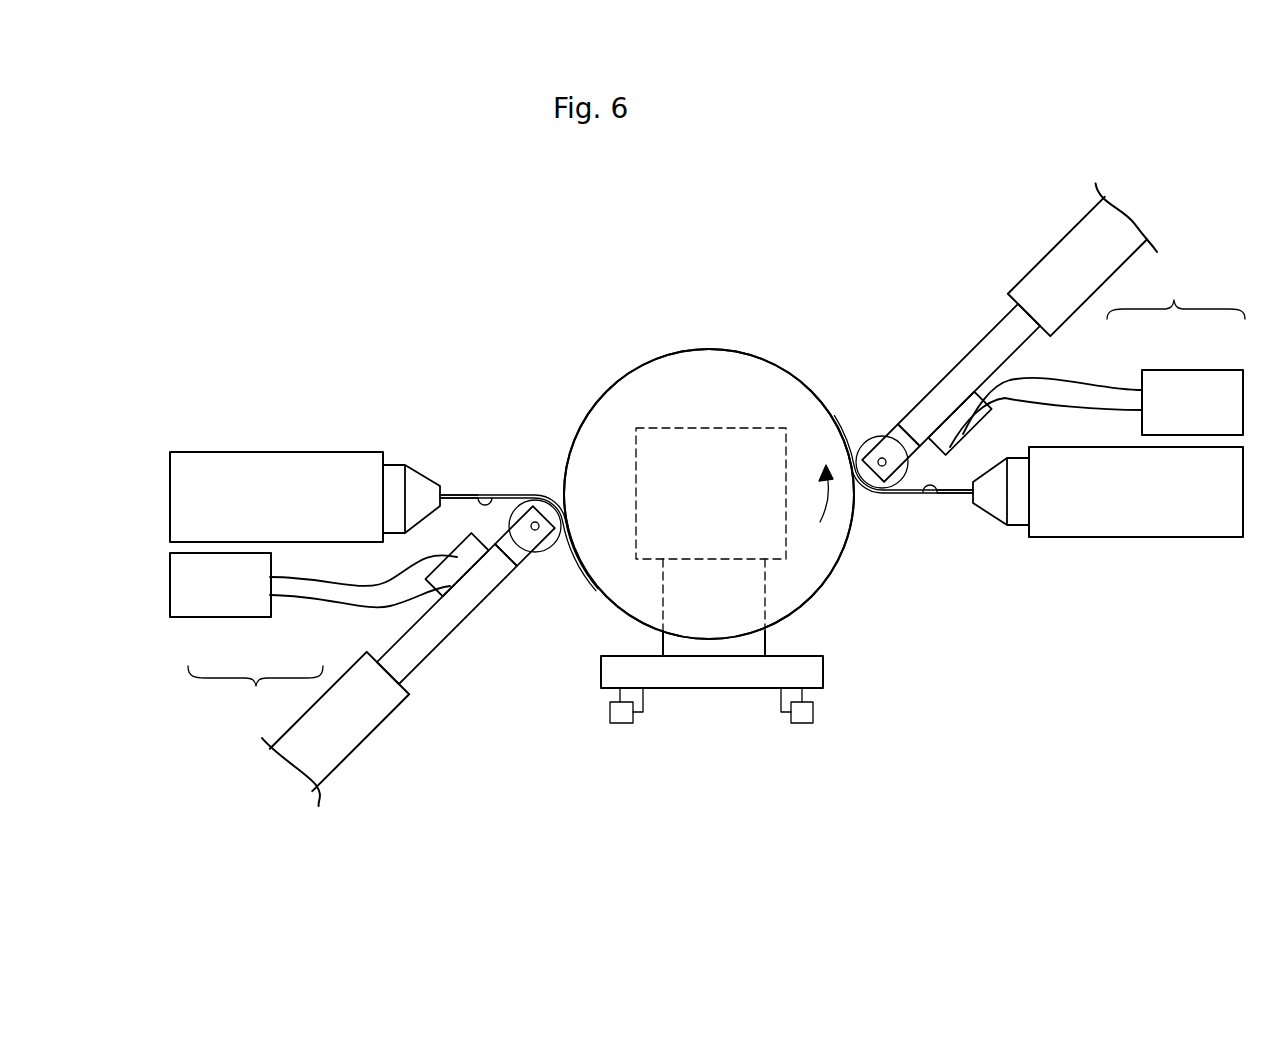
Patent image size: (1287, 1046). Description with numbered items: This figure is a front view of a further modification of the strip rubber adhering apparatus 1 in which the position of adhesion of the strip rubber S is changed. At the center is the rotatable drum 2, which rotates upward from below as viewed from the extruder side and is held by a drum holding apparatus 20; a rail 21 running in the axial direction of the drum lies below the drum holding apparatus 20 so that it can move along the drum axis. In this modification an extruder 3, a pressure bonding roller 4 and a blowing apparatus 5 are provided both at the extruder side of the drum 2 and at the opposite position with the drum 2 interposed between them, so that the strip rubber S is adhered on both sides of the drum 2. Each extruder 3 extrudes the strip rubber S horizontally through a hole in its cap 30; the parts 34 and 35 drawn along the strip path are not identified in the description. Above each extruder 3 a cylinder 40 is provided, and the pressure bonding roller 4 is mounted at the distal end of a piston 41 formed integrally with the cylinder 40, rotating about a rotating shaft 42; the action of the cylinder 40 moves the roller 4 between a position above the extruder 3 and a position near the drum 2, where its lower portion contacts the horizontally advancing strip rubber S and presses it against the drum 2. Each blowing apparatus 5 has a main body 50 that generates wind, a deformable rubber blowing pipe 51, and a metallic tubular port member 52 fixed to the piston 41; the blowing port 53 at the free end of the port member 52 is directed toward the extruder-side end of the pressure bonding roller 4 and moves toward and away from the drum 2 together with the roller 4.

The strip rubber adhering apparatus 1 is at (733, 220).
The drum 2 is at (718, 372).
The drum holding apparatus 20 is at (686, 450).
The rail 21 is at (610, 713).
The extruder 3 is at (220, 473).
The cap 30 is at (398, 477).
The sheet guide 34 is at (477, 492).
The guide member 35 is at (505, 492).
The strip rubber S is at (452, 489).
The pressure bonding roller 4 is at (541, 550).
The rotating shaft 42 is at (543, 532).
The blowing port 53 is at (497, 548).
The piston 41 is at (420, 652).
The cylinder 40 is at (362, 723).
The blowing apparatus 5 is at (716, 492).
The main body 50 is at (215, 602).
The blowing pipe 51 is at (297, 590).
The port member 52 is at (455, 560).